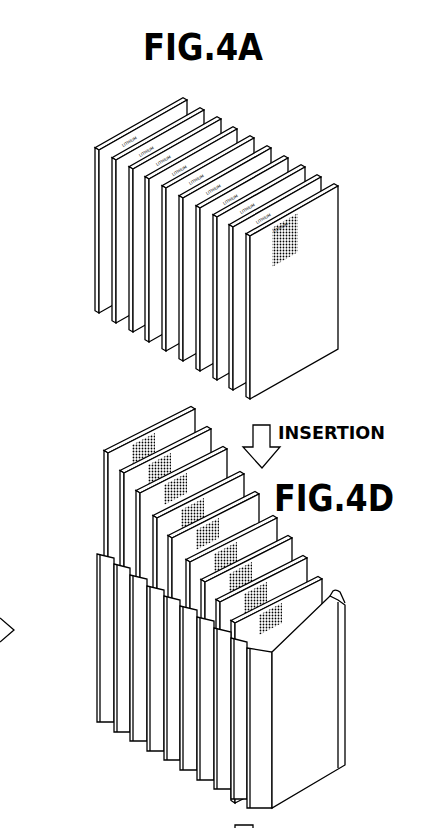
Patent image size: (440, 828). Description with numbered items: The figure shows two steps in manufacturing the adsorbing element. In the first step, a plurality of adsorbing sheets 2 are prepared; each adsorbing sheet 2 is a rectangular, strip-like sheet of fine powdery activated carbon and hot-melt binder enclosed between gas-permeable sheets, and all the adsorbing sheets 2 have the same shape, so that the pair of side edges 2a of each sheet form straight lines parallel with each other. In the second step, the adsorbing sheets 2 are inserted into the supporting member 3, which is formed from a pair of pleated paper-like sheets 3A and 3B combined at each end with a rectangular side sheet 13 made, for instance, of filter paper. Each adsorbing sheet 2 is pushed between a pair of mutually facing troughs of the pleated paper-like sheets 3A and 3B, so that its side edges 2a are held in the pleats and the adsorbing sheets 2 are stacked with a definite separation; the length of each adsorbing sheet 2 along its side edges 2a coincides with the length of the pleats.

In FIG. 4A, the adsorbing sheet 2 is at (208, 242).
In FIG. 4D, the adsorbing sheet 2 is at (182, 610).
In FIG. 4A, the side edges 2a is at (205, 120).
In FIG. 4D, the side edges 2a is at (128, 523).
In FIG. 4D, the supporting member 3 is at (191, 685).
In FIG. 4D, the paper-like sheet 3A is at (188, 753).
In FIG. 4D, the paper-like sheet 3B is at (331, 592).
In FIG. 4A, the side sheet 13 is at (0, 330).
In FIG. 4D, the side sheet 13 is at (295, 778).